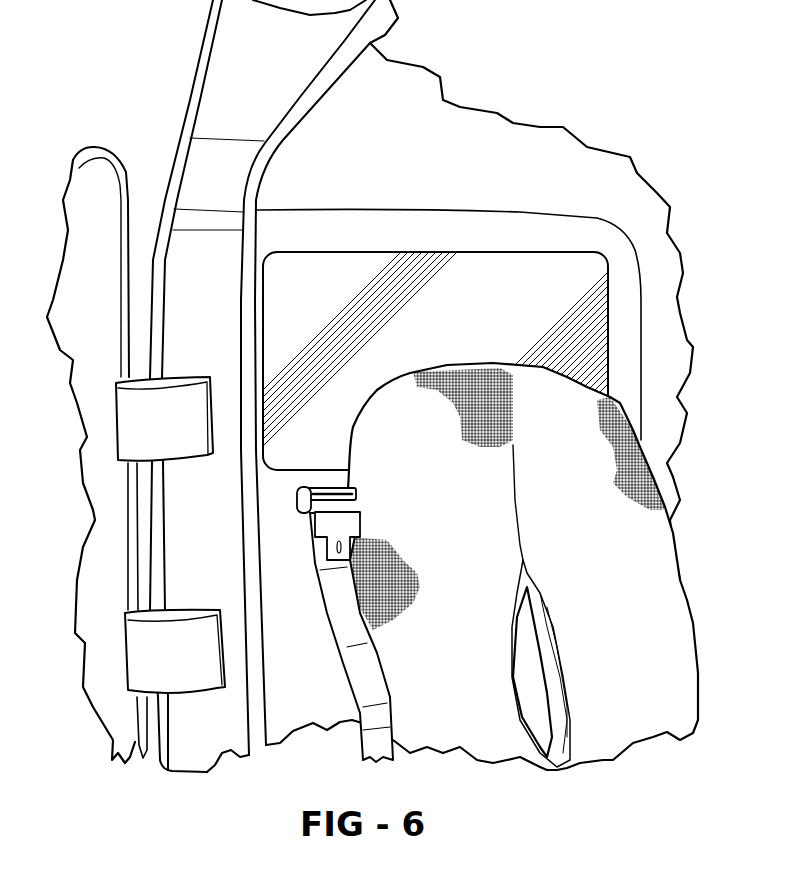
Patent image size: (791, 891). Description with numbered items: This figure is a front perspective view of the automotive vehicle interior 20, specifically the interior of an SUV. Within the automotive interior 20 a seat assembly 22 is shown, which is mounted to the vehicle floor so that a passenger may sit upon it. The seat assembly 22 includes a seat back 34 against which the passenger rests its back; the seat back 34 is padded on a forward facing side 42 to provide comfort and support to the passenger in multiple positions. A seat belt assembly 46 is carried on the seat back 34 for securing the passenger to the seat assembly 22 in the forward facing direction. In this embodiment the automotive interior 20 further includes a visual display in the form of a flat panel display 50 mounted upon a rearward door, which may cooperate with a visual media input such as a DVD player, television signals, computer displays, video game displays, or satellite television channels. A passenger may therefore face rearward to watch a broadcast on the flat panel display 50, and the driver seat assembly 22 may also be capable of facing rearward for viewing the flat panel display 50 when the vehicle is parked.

The automotive vehicle interior 20 is at (154, 118).
The seat assembly 22 is at (301, 563).
The seat back 34 is at (665, 573).
The forward facing side 42 is at (607, 737).
The seat belt assembly 46 is at (373, 680).
The flat panel display 50 is at (290, 328).